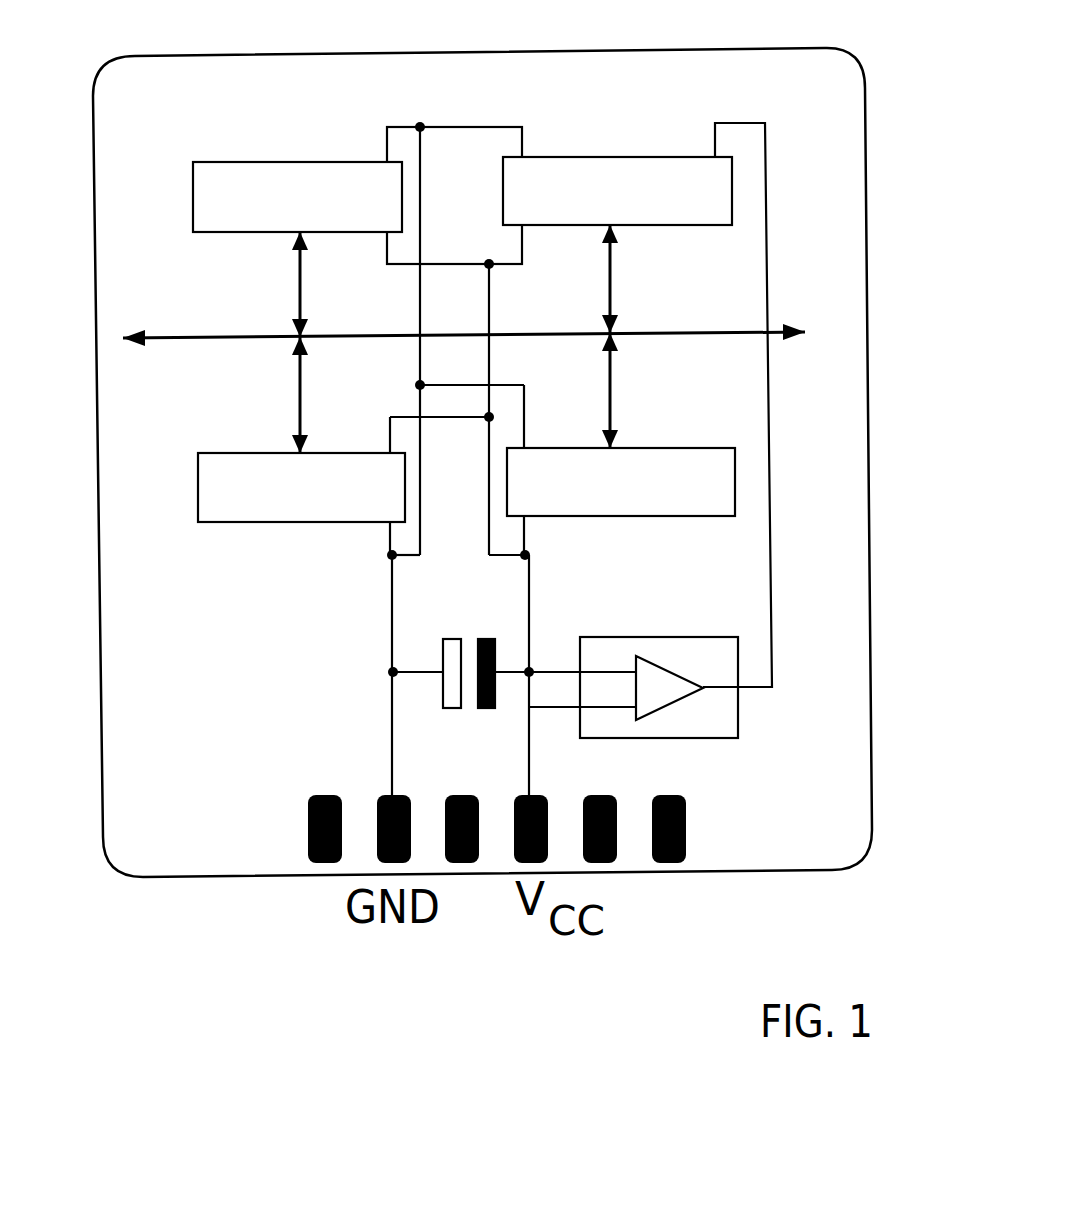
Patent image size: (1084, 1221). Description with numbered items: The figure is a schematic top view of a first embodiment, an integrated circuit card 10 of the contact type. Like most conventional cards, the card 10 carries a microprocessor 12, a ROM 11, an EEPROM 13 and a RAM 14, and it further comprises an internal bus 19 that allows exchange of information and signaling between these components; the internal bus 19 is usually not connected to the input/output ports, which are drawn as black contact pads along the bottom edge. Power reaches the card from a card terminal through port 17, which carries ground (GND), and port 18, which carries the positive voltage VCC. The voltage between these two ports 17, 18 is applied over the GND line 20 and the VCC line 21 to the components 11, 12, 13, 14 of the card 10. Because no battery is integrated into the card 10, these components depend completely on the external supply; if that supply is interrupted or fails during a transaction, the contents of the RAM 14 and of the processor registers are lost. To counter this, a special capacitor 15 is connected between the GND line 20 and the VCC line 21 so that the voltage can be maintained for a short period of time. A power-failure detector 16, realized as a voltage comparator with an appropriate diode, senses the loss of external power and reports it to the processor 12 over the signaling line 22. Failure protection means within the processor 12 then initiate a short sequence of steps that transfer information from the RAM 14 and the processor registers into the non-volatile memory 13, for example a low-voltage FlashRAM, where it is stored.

The integrated circuit card 10 is at (742, 60).
The ROM 11 is at (228, 165).
The microprocessor 12 is at (675, 167).
The EEPROM 13 is at (242, 515).
The RAM 14 is at (694, 502).
The capacitor 15 is at (453, 638).
The power-failure detector 16 is at (728, 725).
The ground port 17 is at (380, 793).
The positive voltage port 18 is at (517, 793).
The internal bus 19 is at (807, 327).
The GND line 20 is at (390, 607).
The VCC line 21 is at (530, 615).
The signaling line 22 is at (772, 550).